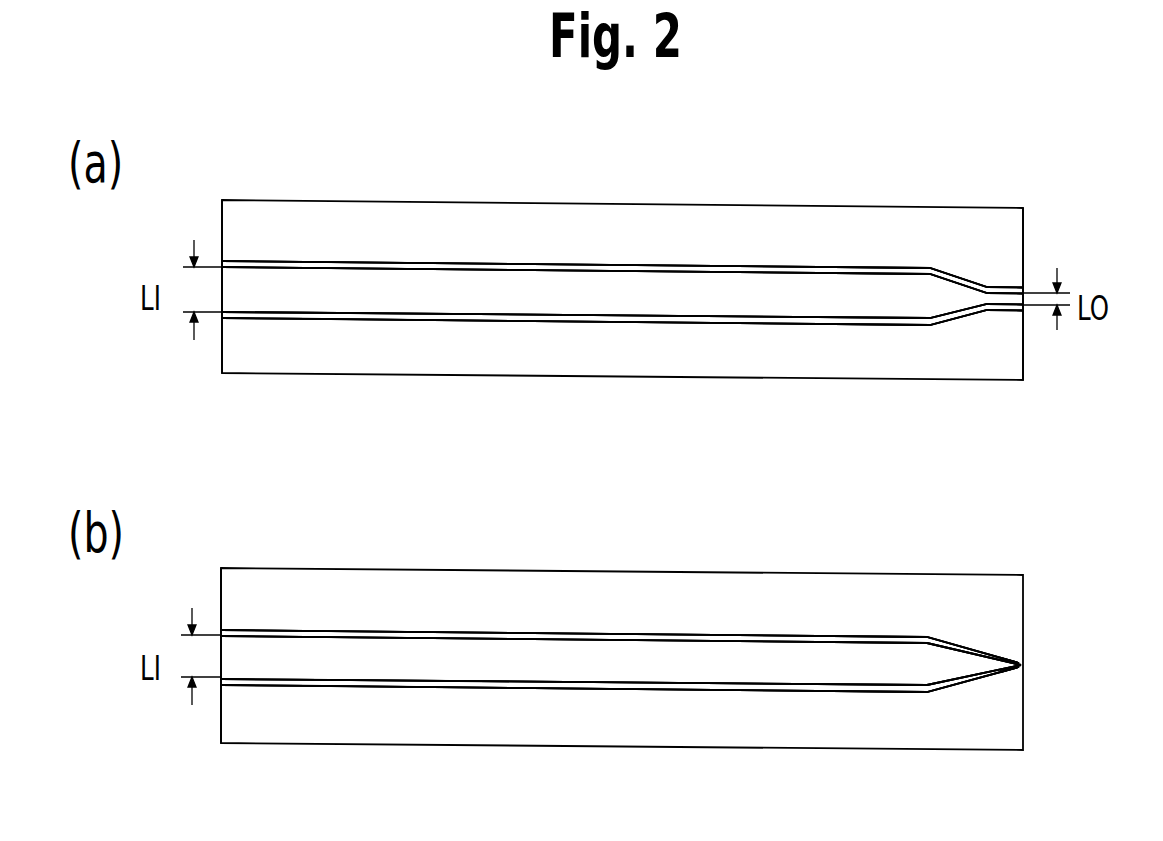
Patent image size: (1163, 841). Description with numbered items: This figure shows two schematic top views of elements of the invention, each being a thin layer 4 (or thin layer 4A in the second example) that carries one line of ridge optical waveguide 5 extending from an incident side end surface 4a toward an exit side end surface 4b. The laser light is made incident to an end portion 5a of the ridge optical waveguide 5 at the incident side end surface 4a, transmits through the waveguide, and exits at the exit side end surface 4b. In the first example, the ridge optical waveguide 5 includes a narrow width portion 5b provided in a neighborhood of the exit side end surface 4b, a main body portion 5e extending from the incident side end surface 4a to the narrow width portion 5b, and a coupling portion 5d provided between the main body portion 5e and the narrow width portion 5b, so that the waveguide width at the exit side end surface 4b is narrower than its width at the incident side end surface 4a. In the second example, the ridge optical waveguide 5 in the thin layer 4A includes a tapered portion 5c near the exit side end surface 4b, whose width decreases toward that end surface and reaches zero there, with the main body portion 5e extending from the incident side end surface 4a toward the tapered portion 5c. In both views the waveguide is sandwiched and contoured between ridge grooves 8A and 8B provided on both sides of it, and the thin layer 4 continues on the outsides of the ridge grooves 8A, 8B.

The thin layer 4 is at (745, 220).
The thin layer 4A is at (745, 590).
The incident side end surface 4a is at (240, 222).
The exit side end surface 4b is at (1012, 252).
The ridge optical waveguide 5 is at (550, 283).
The end portion 5a is at (257, 283).
The narrow width portion 5b is at (1001, 297).
The tapered portion 5c is at (955, 660).
The coupling portion 5d is at (948, 297).
The main body portion 5e is at (651, 290).
The ridge groove 8A is at (449, 268).
The ridge groove 8B is at (460, 314).